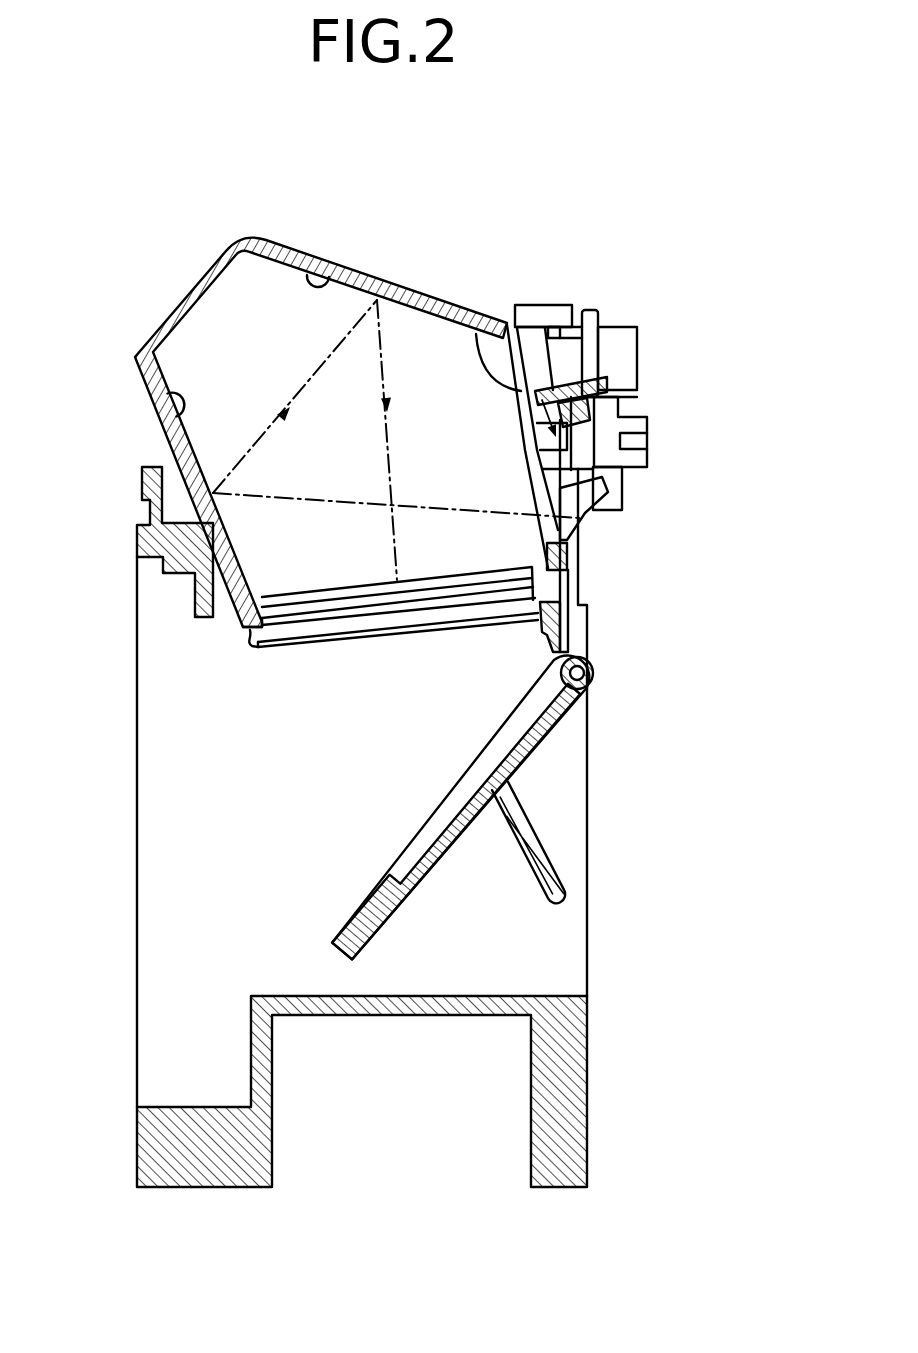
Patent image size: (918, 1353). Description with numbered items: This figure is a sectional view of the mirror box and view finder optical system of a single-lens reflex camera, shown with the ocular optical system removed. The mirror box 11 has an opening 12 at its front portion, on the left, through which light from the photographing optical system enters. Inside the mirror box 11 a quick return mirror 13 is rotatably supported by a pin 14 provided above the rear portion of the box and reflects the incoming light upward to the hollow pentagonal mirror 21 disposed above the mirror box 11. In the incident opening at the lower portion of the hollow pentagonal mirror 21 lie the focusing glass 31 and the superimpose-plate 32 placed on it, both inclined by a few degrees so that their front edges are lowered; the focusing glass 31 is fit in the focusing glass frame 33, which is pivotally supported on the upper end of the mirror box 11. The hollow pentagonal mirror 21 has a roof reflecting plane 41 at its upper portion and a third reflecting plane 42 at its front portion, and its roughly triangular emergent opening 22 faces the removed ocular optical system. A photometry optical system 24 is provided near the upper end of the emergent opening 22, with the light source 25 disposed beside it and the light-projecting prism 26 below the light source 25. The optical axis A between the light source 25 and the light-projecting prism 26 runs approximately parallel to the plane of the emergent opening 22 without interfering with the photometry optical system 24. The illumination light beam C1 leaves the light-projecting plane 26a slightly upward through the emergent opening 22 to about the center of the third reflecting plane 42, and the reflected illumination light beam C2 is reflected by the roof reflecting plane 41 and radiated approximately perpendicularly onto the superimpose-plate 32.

The mirror box 11 is at (587, 966).
The opening 12 is at (150, 1055).
The quick return mirror 13 is at (510, 757).
The pin 14 is at (594, 668).
The hollow pentagonal mirror 21 is at (280, 236).
The emergent opening 22 is at (481, 335).
The photometry optical system 24 is at (606, 310).
The light source 25 is at (538, 306).
The light-projecting prism 26 is at (603, 500).
The light-projecting plane 26a is at (573, 543).
The focusing glass 31 is at (318, 632).
The superimpose-plate 32 is at (290, 606).
The focusing glass frame 33 is at (256, 652).
The roof reflecting plane 41 is at (327, 278).
The third reflecting plane 42 is at (170, 398).
The optical axis A is at (572, 471).
The illumination light beam C1 is at (472, 510).
The illumination light beam C2 is at (390, 381).